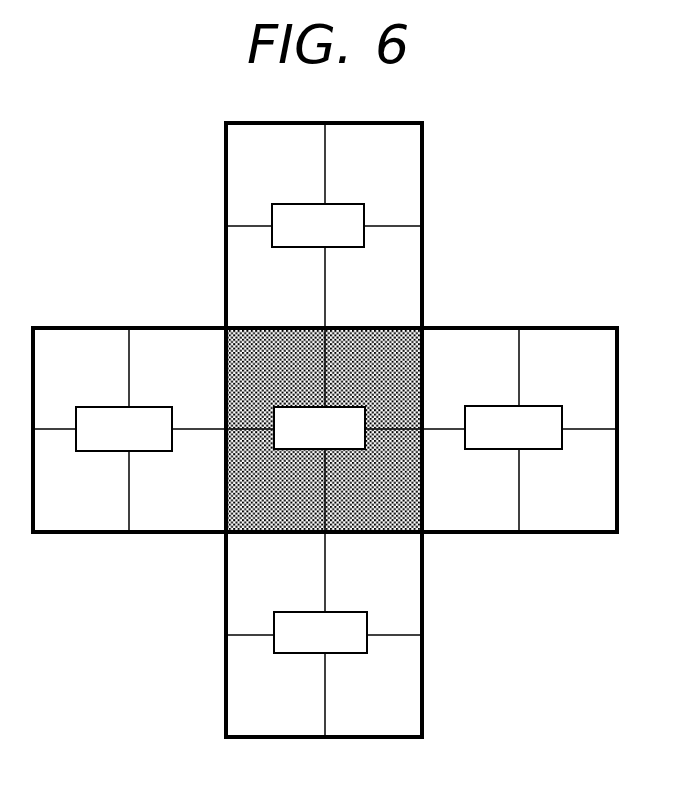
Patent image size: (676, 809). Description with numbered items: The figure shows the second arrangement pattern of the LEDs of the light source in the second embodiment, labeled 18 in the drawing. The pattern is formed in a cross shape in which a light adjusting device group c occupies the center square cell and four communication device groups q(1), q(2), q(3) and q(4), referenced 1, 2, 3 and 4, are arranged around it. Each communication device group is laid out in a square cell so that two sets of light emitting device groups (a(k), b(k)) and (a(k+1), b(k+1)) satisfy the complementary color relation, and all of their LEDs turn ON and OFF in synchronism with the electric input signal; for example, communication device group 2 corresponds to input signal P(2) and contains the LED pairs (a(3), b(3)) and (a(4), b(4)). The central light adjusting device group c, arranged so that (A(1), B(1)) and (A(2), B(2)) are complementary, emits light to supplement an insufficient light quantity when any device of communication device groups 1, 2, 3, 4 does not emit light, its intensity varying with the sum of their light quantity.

The pixel block / unit pixel array 18 is at (520, 243).
The communication device group q 1 is at (513, 427).
The communication device group q 2 is at (320, 632).
The communication device group q 3 is at (124, 429).
The communication device group q 4 is at (318, 225).